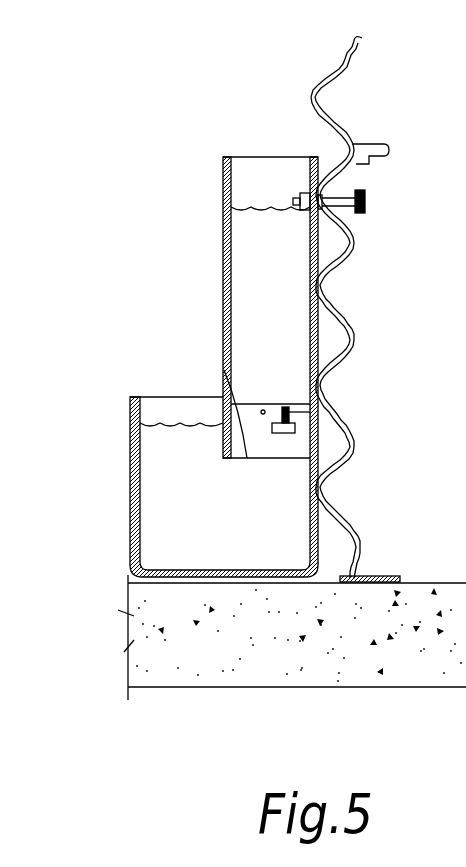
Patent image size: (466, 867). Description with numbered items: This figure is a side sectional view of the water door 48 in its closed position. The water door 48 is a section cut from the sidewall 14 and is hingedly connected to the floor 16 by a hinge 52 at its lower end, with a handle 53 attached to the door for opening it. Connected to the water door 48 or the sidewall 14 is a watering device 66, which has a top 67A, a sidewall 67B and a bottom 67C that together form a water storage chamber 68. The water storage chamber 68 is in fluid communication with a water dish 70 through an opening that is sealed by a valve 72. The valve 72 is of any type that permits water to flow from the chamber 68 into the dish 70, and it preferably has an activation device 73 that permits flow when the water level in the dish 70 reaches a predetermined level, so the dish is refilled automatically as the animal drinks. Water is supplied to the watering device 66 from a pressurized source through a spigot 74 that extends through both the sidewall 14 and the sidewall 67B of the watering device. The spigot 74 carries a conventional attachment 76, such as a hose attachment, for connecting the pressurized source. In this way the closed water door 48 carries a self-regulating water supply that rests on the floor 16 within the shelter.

The sidewall 14 is at (346, 57).
The floor 16 is at (142, 580).
The water door 48 is at (389, 331).
The hinge 52 is at (390, 580).
The handle 53 is at (378, 143).
The watering device 66 is at (150, 91).
The top 67A is at (270, 157).
The sidewall 67B is at (329, 263).
The bottom 67C is at (224, 362).
The water storage chamber 68 is at (243, 285).
The water dish 70 is at (150, 468).
The valve 72 is at (292, 412).
The activation device 73 is at (296, 431).
The spigot 74 is at (396, 175).
The attachment 76 is at (364, 214).